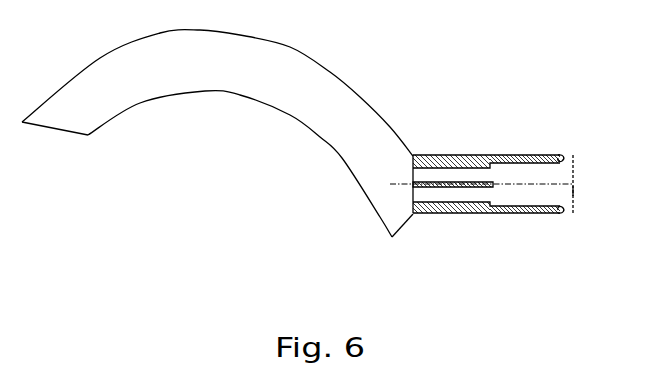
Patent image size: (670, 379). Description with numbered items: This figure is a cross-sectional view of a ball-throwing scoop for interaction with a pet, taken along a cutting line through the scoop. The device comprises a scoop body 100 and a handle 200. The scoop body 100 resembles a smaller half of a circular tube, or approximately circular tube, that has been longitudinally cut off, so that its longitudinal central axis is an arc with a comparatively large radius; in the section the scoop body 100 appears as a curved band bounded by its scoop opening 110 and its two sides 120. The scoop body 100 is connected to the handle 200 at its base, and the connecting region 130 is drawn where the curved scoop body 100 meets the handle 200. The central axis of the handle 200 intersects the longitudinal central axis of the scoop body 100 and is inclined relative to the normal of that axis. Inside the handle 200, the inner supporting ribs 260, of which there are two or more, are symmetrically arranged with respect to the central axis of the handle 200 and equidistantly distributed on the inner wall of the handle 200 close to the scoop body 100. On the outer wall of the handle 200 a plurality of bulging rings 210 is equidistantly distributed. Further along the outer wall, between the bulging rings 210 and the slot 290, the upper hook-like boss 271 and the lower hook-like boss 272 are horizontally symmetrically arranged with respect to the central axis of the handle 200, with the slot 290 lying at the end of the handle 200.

The scoop body 100 is at (221, 103).
The scoop opening 110 is at (63, 131).
The sides 120 is at (341, 159).
The connecting segment 130 is at (407, 223).
The handle 200 is at (510, 169).
The bulging rings 210 is at (476, 157).
The inner supporting ribs 260 is at (494, 184).
The upper hook-like boss 271 is at (567, 214).
The lower hook-like boss 272 is at (568, 157).
The slot 290 is at (571, 191).